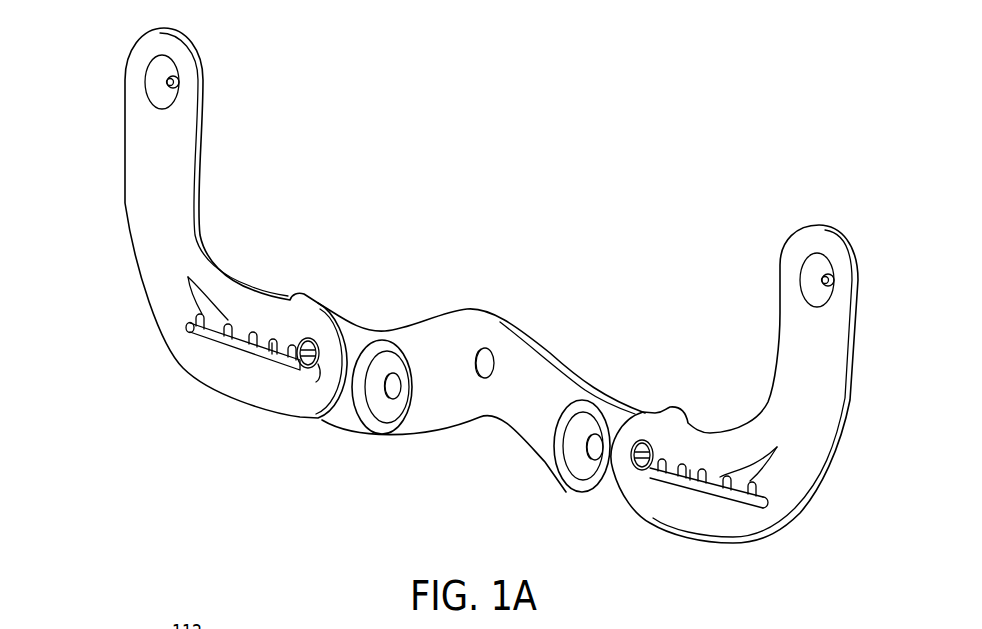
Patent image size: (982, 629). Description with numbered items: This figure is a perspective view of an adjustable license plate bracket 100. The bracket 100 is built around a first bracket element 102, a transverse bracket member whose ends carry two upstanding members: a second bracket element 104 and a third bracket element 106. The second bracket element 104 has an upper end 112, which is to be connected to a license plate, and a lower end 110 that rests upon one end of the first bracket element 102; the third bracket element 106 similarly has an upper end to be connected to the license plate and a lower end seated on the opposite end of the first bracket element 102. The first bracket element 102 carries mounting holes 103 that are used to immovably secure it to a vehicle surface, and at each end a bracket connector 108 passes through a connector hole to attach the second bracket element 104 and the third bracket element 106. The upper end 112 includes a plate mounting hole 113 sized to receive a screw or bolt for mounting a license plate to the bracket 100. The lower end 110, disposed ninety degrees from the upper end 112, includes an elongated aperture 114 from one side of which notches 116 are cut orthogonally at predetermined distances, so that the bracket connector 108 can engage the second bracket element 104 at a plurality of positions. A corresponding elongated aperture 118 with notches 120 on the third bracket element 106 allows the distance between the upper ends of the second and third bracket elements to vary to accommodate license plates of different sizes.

The bracket 100 is at (585, 267).
The first bracket element 102 is at (422, 328).
The mounting holes 103 is at (392, 388).
The second bracket element 104 is at (193, 136).
The third bracket element 106 is at (784, 326).
The bracket connector 108 is at (311, 342).
The lower end 110 is at (232, 363).
The upper end 112 is at (125, 81).
The plate mounting hole 113 is at (175, 78).
The elongated aperture 114 is at (192, 338).
The notches 116 is at (201, 284).
The second rack 118 is at (764, 504).
The second tab 120 is at (756, 450).